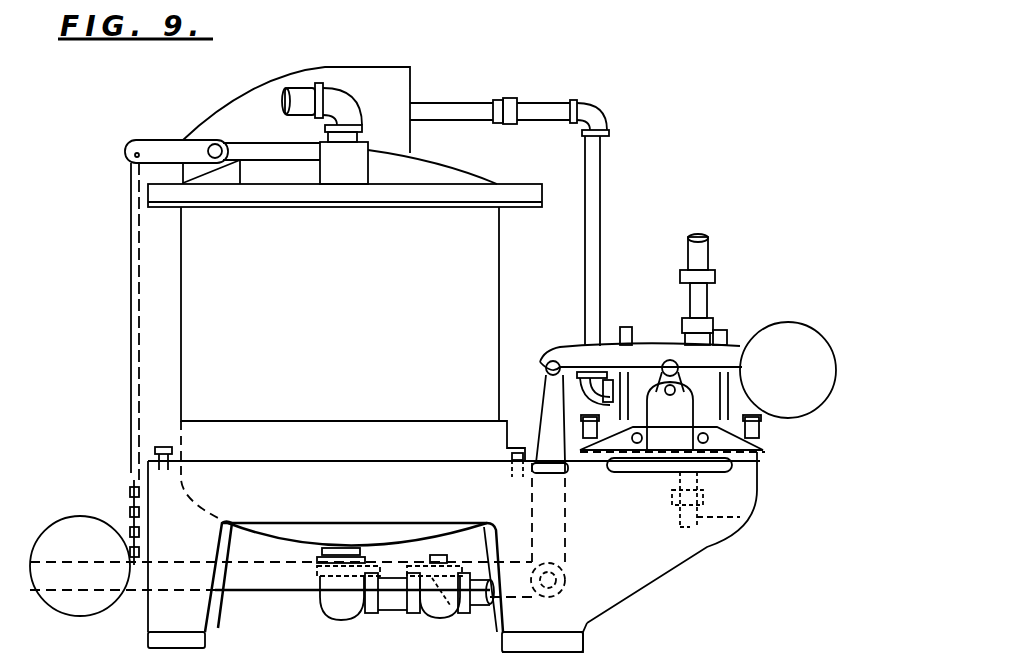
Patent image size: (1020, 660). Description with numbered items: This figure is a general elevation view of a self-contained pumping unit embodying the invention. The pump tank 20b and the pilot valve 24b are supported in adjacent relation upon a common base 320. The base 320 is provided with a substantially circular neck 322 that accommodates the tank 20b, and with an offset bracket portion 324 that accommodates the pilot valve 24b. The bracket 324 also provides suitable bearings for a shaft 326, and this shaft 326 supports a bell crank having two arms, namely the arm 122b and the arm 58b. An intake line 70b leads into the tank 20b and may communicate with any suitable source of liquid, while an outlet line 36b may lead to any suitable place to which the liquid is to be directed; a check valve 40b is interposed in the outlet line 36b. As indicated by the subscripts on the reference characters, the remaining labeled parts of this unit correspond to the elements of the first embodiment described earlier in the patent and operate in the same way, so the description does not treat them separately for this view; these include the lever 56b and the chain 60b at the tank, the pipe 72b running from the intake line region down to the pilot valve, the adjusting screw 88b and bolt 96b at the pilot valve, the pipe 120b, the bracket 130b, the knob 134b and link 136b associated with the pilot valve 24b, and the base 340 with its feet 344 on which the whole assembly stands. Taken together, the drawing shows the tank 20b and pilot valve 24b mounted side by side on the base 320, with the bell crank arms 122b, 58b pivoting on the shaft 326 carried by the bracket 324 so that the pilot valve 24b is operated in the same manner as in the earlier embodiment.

The pump tank 20b is at (345, 330).
The pilot valve 24b is at (645, 338).
The outlet line 36b is at (397, 610).
The check valve 40b is at (437, 613).
The lever arm 56b is at (168, 142).
The bell crank arm 58b is at (388, 563).
The chain 60b is at (130, 478).
The intake line 70b is at (410, 67).
The pipe 72b is at (601, 180).
The adjusting screw 88b is at (708, 293).
The bolt 96b is at (740, 517).
The pipe 120b is at (100, 508).
The bell crank arm 122b is at (548, 397).
The bracket 130b is at (602, 345).
The knob 134b is at (788, 370).
The link 136b is at (700, 390).
The base 320 is at (245, 468).
The circular neck 322 is at (170, 420).
The offset bracket portion 324 is at (705, 545).
The shaft 326 is at (565, 578).
The base 340 is at (716, 652).
The foot 344 is at (740, 658).